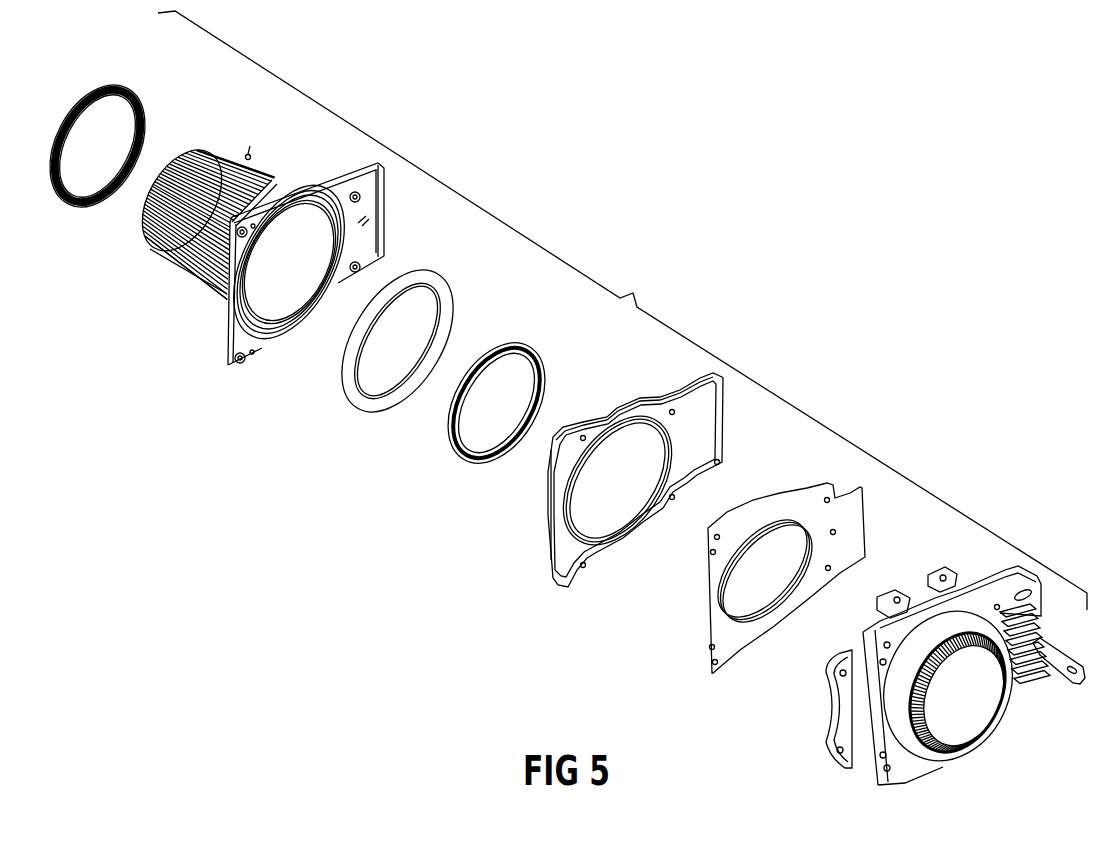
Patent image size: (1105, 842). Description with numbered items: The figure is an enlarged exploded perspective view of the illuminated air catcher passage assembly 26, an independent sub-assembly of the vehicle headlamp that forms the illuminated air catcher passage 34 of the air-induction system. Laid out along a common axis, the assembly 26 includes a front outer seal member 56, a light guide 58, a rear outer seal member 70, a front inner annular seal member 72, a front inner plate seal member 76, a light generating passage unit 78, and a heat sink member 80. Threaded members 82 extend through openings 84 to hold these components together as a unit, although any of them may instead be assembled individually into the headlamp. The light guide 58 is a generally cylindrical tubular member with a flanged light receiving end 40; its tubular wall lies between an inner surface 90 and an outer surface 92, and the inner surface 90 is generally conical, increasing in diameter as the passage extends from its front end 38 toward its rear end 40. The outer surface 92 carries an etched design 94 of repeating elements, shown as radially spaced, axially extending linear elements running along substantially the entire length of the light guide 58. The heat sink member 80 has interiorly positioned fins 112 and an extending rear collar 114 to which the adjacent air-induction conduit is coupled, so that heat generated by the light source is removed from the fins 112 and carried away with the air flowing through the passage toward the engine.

The illuminated air catcher passage assembly 26 is at (622, 310).
The illuminated air catcher passage 34 is at (293, 232).
The front end 38 is at (140, 220).
The flanged light receiving end 40 is at (297, 330).
The front outer seal member 56 is at (138, 96).
The light guide 58 is at (185, 301).
The rear outer seal member 70 is at (352, 393).
The front inner annular seal member 72 is at (446, 442).
The front inner plate seal member 76 is at (552, 525).
The light generating passage unit 78 is at (728, 648).
The heat sink member 80 is at (1043, 597).
The threaded members 82 is at (867, 779).
The openings 84 is at (247, 373).
The inner surface 90 is at (292, 293).
The outer surface 92 is at (147, 248).
The design 94 is at (249, 155).
The fins 112 is at (968, 702).
The rear collar 114 is at (913, 755).